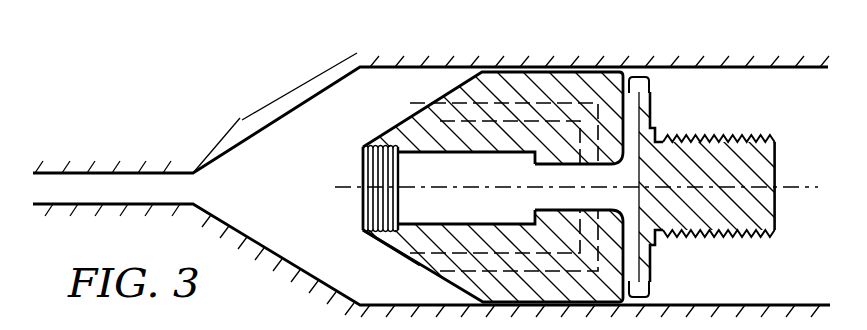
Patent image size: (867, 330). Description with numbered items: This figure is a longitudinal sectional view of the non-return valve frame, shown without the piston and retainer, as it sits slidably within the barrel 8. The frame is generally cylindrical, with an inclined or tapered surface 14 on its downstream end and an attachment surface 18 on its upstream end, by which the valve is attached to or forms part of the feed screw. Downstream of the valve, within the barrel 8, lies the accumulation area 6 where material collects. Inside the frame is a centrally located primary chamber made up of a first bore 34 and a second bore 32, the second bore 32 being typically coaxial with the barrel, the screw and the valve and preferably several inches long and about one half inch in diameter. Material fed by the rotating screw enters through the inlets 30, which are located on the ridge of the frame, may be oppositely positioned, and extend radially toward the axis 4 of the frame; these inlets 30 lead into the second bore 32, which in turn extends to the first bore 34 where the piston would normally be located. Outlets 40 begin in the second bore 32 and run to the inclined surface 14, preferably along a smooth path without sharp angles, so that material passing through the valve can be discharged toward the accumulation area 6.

The axis 4 is at (797, 168).
The accumulation area 6 is at (348, 170).
The barrel 8 is at (527, 48).
The inclined surface 14 is at (437, 99).
The attachment surface 18 is at (746, 238).
The inlet 30 is at (630, 83).
The second bore 32 is at (590, 200).
The first bore 34 is at (481, 182).
The outlet 40 is at (405, 254).